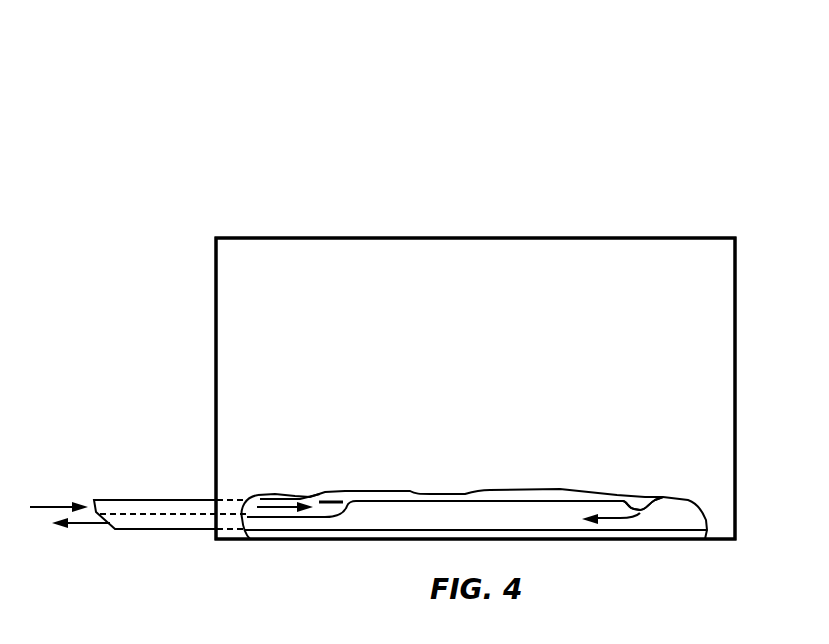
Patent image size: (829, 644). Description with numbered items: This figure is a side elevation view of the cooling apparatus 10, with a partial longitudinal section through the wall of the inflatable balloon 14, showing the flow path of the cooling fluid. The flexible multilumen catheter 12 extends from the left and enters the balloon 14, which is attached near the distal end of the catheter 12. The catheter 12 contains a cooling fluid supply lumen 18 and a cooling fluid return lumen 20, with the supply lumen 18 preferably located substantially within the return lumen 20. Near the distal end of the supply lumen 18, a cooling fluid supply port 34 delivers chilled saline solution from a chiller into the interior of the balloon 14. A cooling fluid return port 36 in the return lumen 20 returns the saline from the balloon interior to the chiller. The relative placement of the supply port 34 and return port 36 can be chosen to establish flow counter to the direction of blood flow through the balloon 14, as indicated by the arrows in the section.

The cooling apparatus 10 is at (216, 106).
The flexible multilumen catheter 12 is at (138, 544).
The inflatable balloon 14 is at (475, 368).
The cooling fluid supply lumen 18 is at (175, 482).
The cooling fluid return lumen 20 is at (165, 555).
The cooling fluid supply port 34 is at (474, 495).
The cooling fluid return port 36 is at (647, 489).